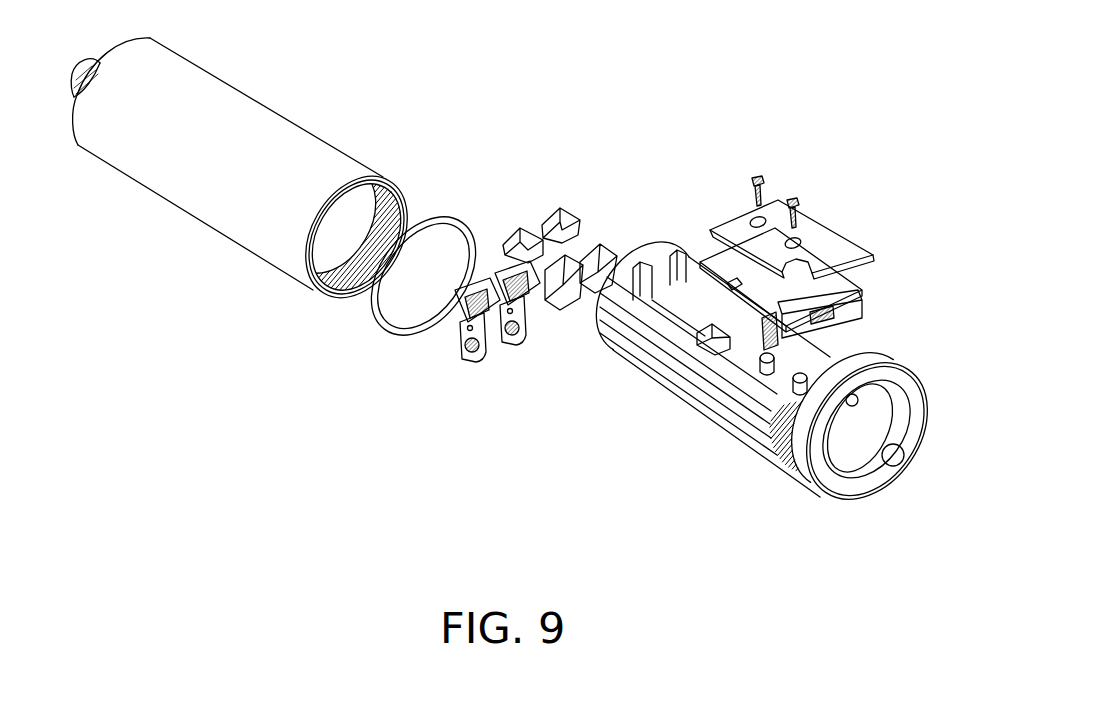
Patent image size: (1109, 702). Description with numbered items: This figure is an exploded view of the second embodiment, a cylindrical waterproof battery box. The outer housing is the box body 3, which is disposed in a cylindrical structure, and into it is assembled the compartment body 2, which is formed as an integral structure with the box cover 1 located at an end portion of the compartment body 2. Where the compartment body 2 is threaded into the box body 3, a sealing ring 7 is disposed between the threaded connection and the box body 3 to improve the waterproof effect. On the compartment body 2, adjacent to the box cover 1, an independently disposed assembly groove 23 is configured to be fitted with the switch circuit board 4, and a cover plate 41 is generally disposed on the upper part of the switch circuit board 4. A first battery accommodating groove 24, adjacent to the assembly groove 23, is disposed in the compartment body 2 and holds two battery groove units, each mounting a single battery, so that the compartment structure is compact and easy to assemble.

The box cover 1 is at (882, 367).
The compartment body 2 is at (682, 233).
The box body 3 is at (263, 108).
The switch circuit board 4 is at (763, 297).
The sealing ring 7 is at (447, 222).
The assembly groove 23 is at (777, 370).
The first battery accommodating groove 24 is at (700, 337).
The cover plate 41 is at (813, 237).